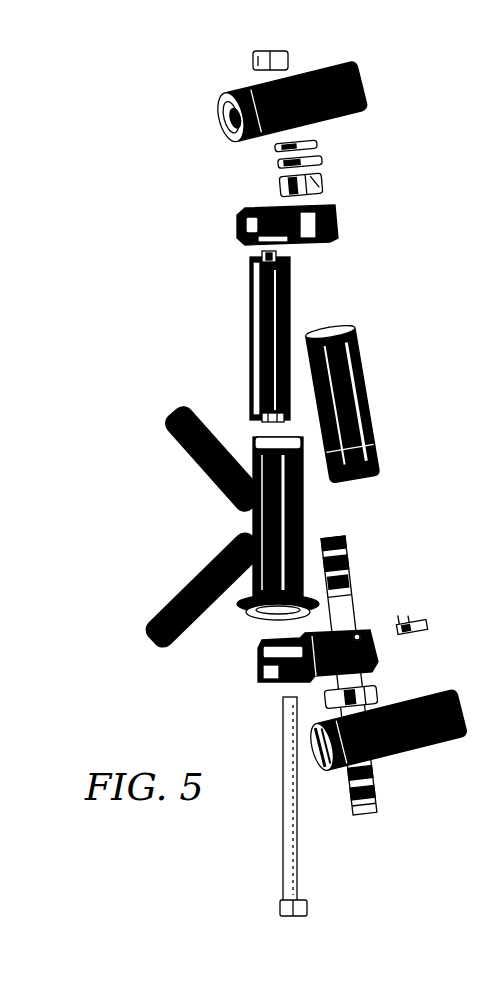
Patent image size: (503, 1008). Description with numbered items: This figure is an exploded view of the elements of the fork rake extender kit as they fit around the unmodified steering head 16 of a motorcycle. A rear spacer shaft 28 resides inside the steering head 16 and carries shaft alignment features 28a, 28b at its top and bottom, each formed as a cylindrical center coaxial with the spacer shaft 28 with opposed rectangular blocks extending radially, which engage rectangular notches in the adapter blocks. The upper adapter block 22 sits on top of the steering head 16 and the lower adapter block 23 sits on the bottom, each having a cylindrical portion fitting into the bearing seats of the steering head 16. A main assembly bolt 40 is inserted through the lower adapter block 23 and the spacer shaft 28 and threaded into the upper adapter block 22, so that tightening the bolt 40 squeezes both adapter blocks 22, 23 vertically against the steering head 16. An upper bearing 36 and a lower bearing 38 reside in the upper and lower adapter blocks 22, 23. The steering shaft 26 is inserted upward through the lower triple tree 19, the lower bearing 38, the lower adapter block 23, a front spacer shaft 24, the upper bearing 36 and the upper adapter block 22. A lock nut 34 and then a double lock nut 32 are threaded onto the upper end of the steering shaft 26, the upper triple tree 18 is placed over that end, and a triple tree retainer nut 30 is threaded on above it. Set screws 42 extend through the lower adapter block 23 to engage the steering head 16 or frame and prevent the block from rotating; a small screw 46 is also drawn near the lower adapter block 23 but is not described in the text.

The steering head 16 is at (277, 515).
The upper triple tree 18 is at (205, 122).
The lower triple tree 19 is at (418, 740).
The upper adapter block 22 is at (238, 220).
The lower adapter block 23 is at (258, 670).
The front spacer shaft 24 is at (340, 400).
The steering shaft 26 is at (345, 605).
The rear spacer shaft 28 is at (268, 320).
The shaft alignment feature 28a is at (255, 260).
The shaft alignment feature 28b is at (255, 418).
The triple tree retainer nut 30 is at (292, 55).
The double lock nut 32 is at (318, 143).
The lock nut 34 is at (322, 160).
The upper bearing 36 is at (323, 188).
The lower bearing 38 is at (368, 692).
The main assembly bolt 40 is at (288, 763).
The set screws 42 is at (417, 627).
The screw 46 is at (367, 625).